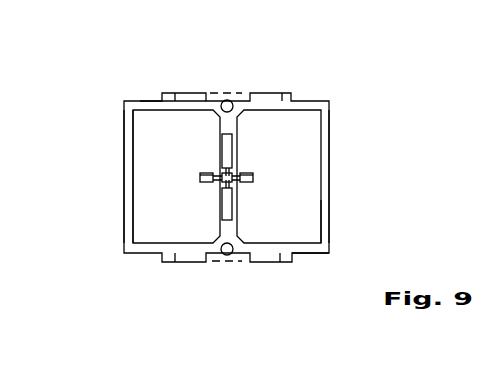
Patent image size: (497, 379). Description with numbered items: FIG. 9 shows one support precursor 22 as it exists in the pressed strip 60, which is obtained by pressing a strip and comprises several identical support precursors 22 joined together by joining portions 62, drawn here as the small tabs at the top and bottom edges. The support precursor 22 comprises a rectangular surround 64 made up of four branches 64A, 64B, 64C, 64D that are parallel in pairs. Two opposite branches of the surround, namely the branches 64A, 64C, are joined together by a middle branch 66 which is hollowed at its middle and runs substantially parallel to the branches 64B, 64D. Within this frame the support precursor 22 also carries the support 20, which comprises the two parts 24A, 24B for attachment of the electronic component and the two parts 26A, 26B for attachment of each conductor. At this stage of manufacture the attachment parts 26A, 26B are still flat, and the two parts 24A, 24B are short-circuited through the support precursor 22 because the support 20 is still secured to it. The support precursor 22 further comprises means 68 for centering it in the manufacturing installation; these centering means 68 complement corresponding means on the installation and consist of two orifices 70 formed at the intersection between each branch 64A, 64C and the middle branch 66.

The support 20 is at (225, 170).
The support precursor 22 is at (362, 226).
The part for attachment of the electronic component 24A is at (202, 174).
The part for attachment of the electronic component 24B is at (250, 183).
The part for attachment of a conductor 26A is at (192, 174).
The part for attachment of a conductor 26B is at (262, 175).
The pressed strip 60 is at (98, 133).
The joining portions 62 is at (175, 93).
The rectangular surround 64 is at (346, 121).
The branch of the surround 64A is at (140, 100).
The branch of the surround 64B is at (329, 205).
The branch of the surround 64C is at (308, 255).
The branch of the surround 64D is at (124, 196).
The middle branch 66 is at (237, 135).
The means for centering 68 is at (238, 90).
The orifices 70 is at (221, 108).